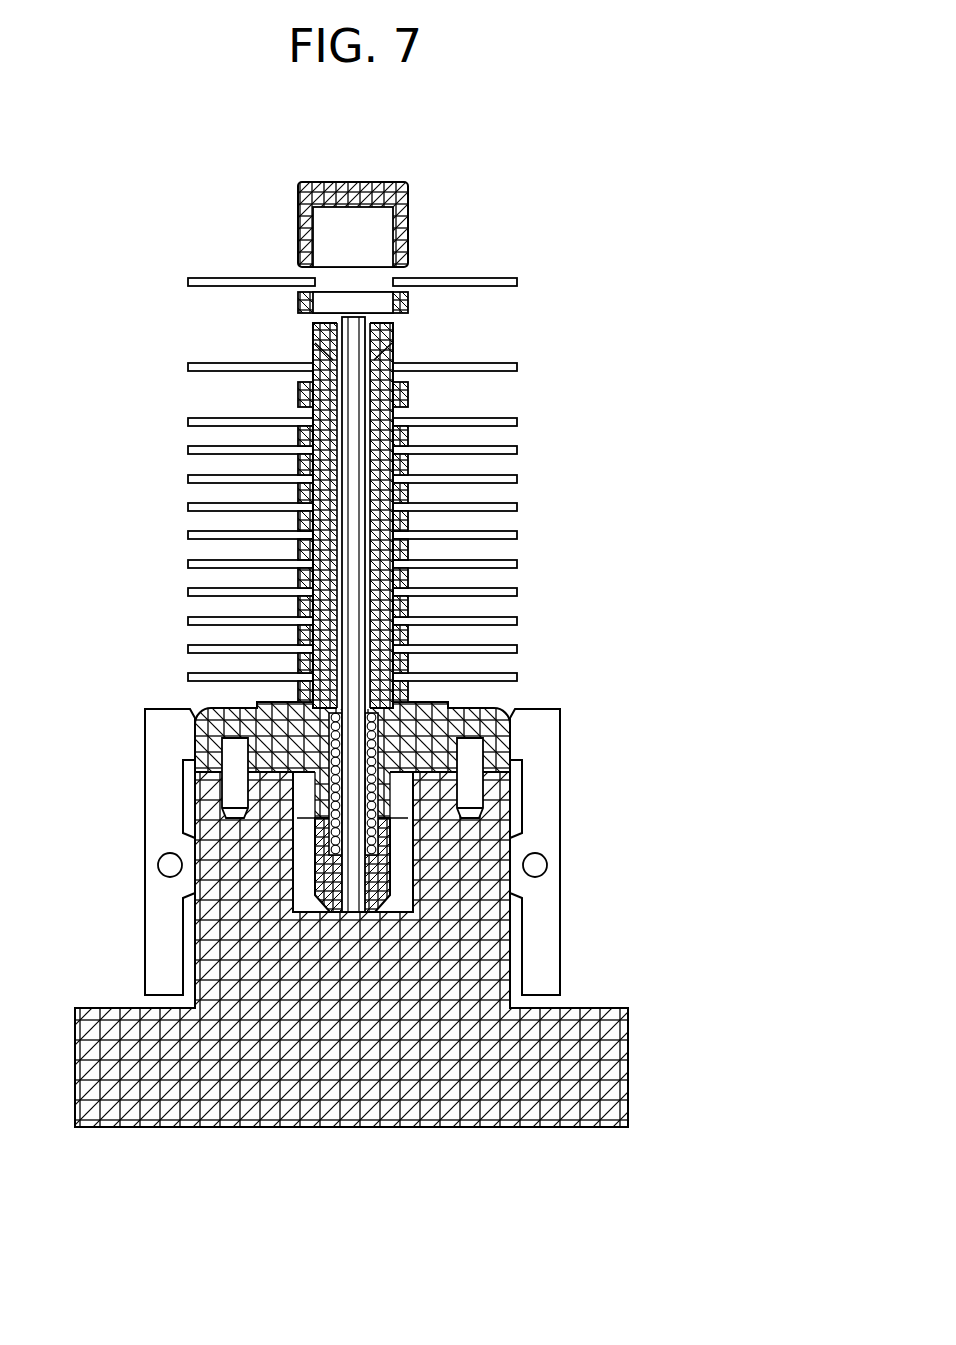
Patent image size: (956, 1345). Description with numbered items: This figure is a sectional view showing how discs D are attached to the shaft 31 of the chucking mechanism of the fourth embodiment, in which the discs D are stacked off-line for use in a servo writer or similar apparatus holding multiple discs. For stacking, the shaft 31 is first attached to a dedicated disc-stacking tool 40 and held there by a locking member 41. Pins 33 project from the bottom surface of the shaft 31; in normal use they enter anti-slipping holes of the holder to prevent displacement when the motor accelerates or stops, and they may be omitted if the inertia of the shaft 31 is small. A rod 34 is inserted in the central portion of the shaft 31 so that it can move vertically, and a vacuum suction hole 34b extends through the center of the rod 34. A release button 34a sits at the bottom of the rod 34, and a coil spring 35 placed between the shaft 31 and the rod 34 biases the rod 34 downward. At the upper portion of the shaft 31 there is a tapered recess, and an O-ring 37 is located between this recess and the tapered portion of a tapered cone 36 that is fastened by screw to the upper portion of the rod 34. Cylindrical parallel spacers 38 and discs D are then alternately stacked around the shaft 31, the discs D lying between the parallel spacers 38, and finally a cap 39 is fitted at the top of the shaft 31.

The shaft 31 is at (207, 712).
The pins 33 is at (477, 790).
The rod 34 is at (335, 872).
The release button 34a is at (343, 912).
The vacuum suction hole 34b is at (353, 598).
The coil spring 35 is at (372, 827).
The tapered cone 36 is at (298, 222).
The O-ring 37 is at (315, 345).
The parallel spacers 38 is at (408, 298).
The cap 39 is at (353, 185).
The disc-stacking tool 40 is at (405, 1112).
The locking member 41 is at (562, 758).
The discs D is at (498, 277).